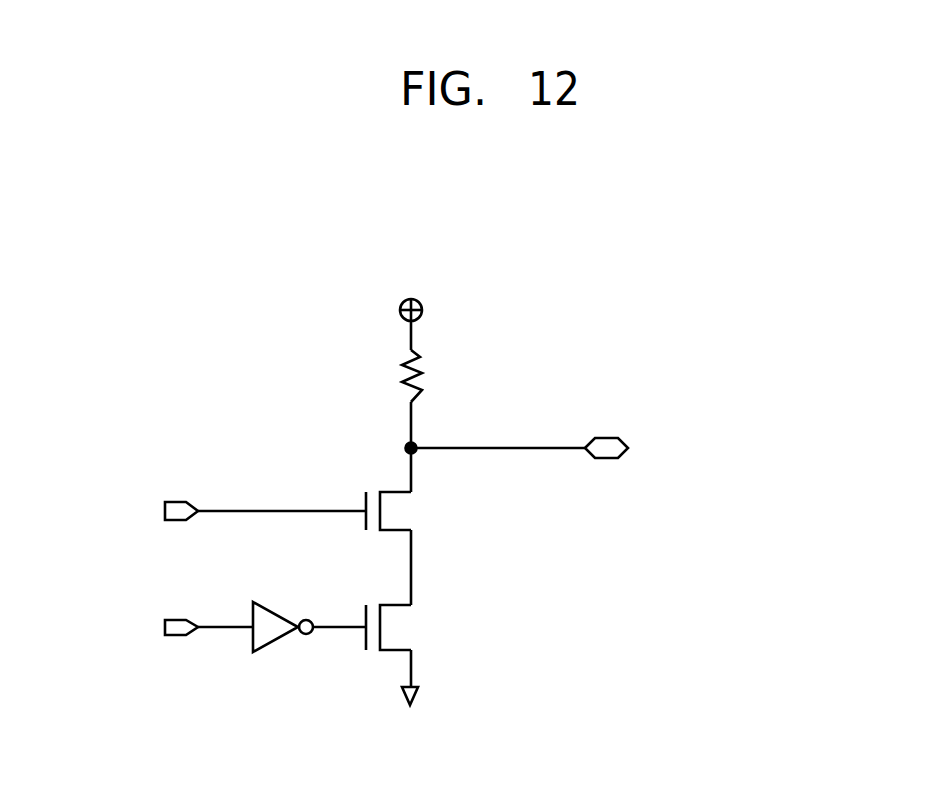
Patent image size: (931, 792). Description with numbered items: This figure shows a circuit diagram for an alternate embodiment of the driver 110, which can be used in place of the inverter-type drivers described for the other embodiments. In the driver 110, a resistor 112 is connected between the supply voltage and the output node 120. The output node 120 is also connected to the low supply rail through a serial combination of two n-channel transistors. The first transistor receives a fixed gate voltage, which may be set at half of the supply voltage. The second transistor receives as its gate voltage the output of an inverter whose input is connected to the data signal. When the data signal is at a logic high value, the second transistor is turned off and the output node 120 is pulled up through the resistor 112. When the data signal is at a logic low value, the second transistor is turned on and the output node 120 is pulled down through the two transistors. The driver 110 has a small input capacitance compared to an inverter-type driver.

The driver 110 is at (722, 261).
The resistor 112 is at (420, 372).
The output node 120 is at (610, 438).